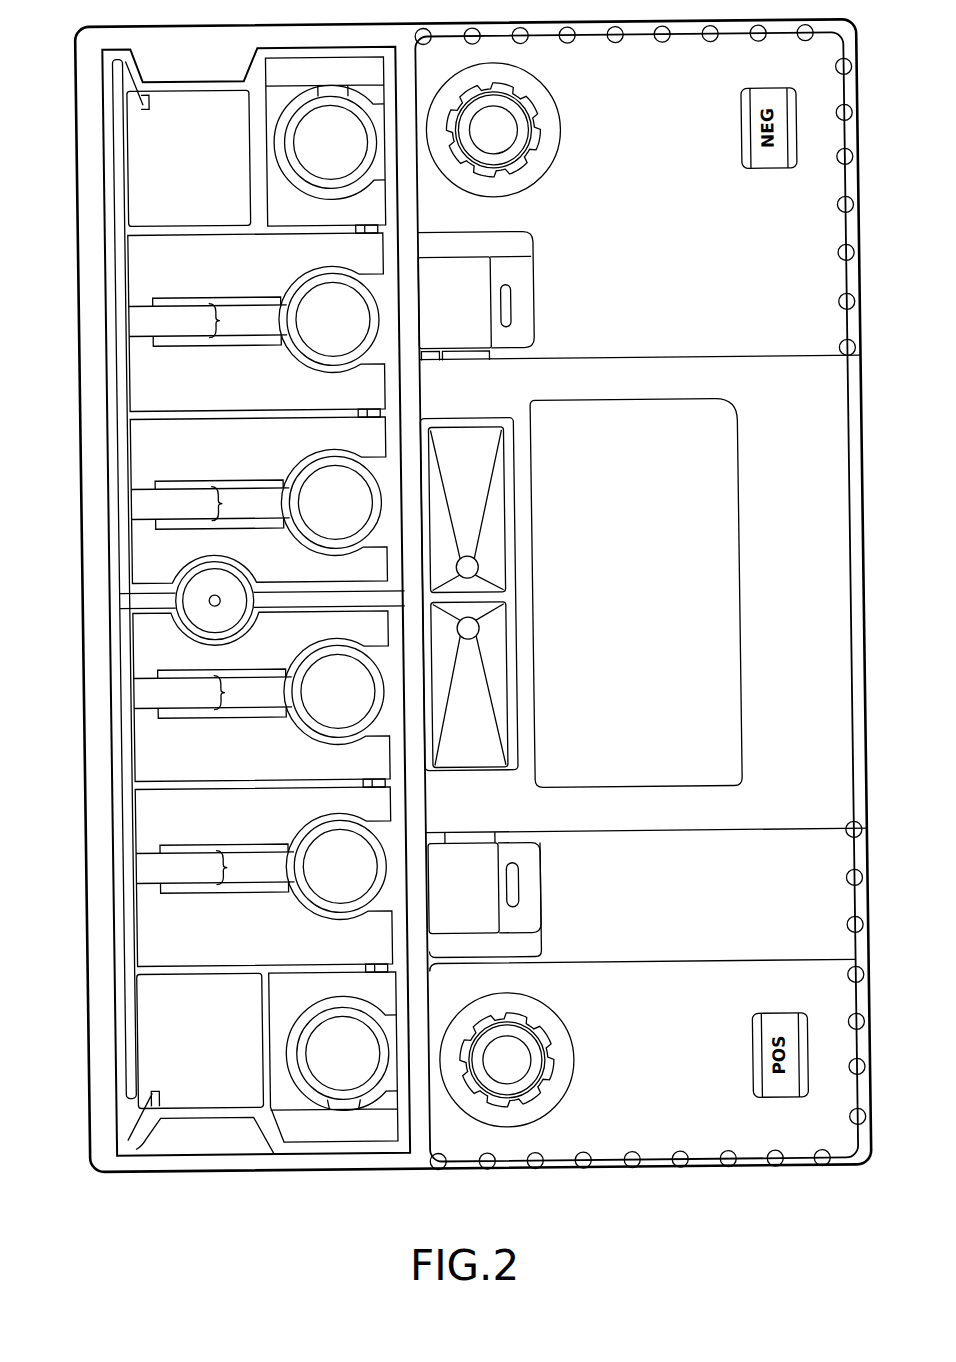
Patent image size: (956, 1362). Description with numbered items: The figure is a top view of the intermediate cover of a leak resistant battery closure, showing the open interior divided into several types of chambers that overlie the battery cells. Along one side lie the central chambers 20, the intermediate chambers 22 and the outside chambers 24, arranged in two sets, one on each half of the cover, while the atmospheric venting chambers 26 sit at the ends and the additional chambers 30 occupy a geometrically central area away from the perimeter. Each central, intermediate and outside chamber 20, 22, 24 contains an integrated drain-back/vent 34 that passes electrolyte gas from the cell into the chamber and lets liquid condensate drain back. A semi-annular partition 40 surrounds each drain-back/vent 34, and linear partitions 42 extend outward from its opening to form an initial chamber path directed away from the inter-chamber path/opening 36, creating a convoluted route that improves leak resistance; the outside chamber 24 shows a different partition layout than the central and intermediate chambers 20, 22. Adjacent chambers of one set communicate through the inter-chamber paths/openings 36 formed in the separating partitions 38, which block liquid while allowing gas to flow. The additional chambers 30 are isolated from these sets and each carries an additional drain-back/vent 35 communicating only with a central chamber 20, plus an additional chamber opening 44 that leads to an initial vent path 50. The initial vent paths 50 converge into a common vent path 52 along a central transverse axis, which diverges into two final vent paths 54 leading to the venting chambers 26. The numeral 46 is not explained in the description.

The central chambers 20 is at (190, 455).
The intermediate chambers 22 is at (192, 271).
The outside chambers 24 is at (295, 221).
The atmospheric venting chambers 26 is at (175, 211).
The additional chambers 30 is at (471, 501).
The drain-back/vent 34 is at (345, 156).
The additional drain-back/vent 35 is at (472, 570).
The inter-chamber path/opening 36 is at (362, 229).
The separating partition 38 is at (292, 233).
The semi-annular partition 40 is at (287, 106).
The linear partitions 42 is at (218, 322).
The additional chamber opening 44 is at (415, 455).
The bus bar portion 46 is at (167, 332).
The initial vent path 50 is at (398, 430).
The common vent path 52 is at (252, 598).
The final vent paths 54 is at (113, 293).